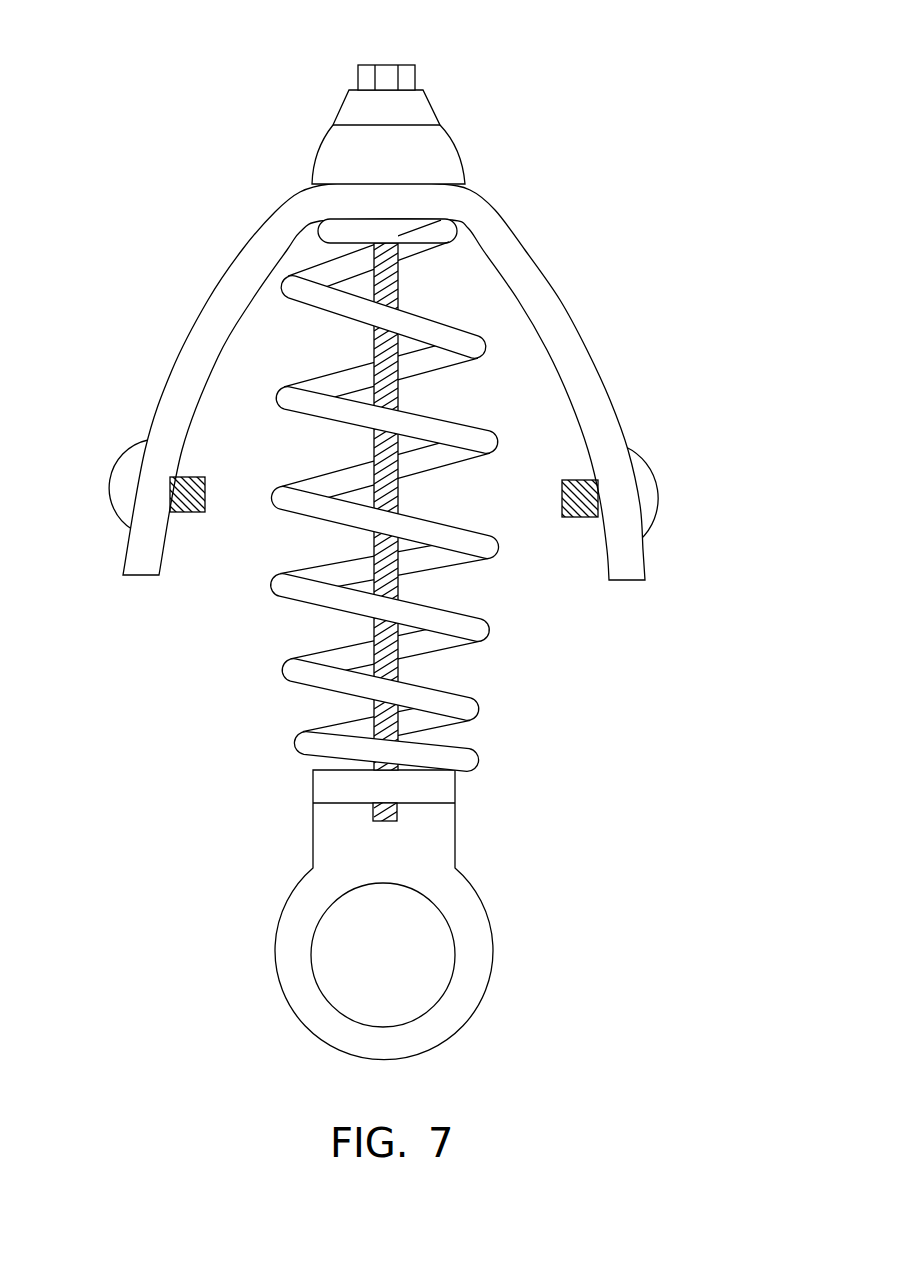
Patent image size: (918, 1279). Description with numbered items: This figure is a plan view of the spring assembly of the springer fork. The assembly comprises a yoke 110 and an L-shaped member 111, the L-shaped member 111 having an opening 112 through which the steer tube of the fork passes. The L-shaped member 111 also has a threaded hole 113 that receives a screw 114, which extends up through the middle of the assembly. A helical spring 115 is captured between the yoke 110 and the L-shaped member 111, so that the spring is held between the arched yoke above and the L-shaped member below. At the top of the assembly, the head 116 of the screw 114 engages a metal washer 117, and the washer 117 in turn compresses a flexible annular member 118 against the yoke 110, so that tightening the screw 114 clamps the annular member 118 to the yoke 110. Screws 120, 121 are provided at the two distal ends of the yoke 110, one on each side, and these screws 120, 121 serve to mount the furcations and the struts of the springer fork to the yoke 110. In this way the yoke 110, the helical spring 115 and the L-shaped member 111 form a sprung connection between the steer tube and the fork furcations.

The yoke 110 is at (540, 290).
The L-shaped member 111 is at (447, 842).
The opening 112 is at (452, 938).
The threaded hole 113 is at (368, 805).
The screw 114 is at (378, 823).
The helical spring 115 is at (293, 668).
The head 116 is at (388, 70).
The metal washer 117 is at (350, 102).
The flexible annular member 118 is at (445, 158).
The screw 120 is at (122, 488).
The screw 121 is at (650, 507).